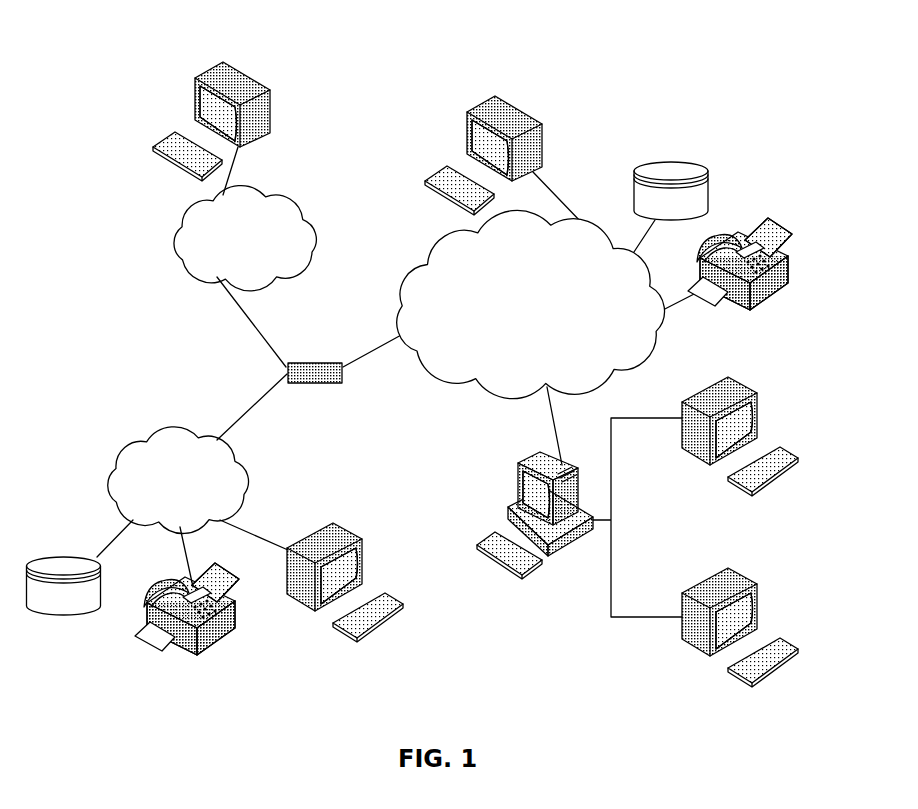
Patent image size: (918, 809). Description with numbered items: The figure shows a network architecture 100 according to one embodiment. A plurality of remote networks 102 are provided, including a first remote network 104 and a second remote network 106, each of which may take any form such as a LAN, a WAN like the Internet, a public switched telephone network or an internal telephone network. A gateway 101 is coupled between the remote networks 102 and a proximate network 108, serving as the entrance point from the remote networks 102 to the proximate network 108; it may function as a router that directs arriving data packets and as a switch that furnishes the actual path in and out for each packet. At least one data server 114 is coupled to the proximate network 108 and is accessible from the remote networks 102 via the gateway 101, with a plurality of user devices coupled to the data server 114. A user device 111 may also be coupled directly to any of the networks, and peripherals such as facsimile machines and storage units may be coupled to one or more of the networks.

The architecture 100 is at (135, 45).
The gateway 101 is at (298, 362).
The remote networks 102 is at (156, 296).
The first remote network 104 is at (112, 458).
The second remote network 106 is at (308, 213).
The proximate network 108 is at (625, 365).
The user device 111 is at (542, 125).
The data server 114 is at (518, 477).